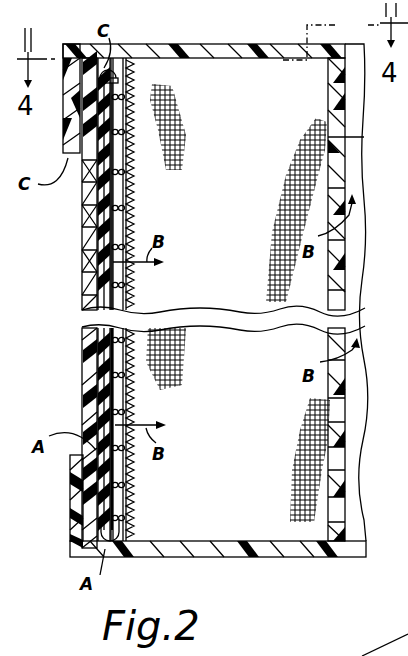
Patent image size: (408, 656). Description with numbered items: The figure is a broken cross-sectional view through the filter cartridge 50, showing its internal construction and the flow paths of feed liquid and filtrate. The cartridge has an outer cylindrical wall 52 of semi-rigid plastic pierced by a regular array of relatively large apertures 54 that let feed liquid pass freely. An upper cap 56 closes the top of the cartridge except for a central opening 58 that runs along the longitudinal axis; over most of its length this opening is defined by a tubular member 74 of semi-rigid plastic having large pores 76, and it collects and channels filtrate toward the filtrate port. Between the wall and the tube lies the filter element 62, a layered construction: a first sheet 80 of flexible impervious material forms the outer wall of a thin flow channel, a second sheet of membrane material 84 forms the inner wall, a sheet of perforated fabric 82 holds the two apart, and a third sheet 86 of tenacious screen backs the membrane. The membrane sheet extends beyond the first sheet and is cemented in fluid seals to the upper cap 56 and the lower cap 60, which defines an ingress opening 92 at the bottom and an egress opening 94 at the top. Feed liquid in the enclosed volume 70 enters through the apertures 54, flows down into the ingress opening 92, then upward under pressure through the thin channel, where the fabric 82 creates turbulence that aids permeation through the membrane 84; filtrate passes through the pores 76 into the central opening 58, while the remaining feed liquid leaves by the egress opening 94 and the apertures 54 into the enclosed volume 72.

The filter cartridge 50 is at (173, 24).
The cylindrical wall 52 is at (92, 349).
The apertures 54 is at (92, 386).
The upper cap 56 is at (277, 45).
The central opening 58 is at (354, 46).
The lower cap 60 is at (72, 519).
The filter element 62 is at (96, 233).
The enclosed volume 70 is at (62, 506).
The enclosed volume 72 is at (58, 128).
The tubular member 74 is at (345, 242).
The pores 76 is at (345, 282).
The first sheet 80 is at (104, 256).
The perforated fabric 82 is at (100, 290).
The second sheet of membrane material 84 is at (135, 284).
The third sheet 86 is at (133, 168).
The ingress opening 92 is at (122, 548).
The egress opening 94 is at (117, 64).